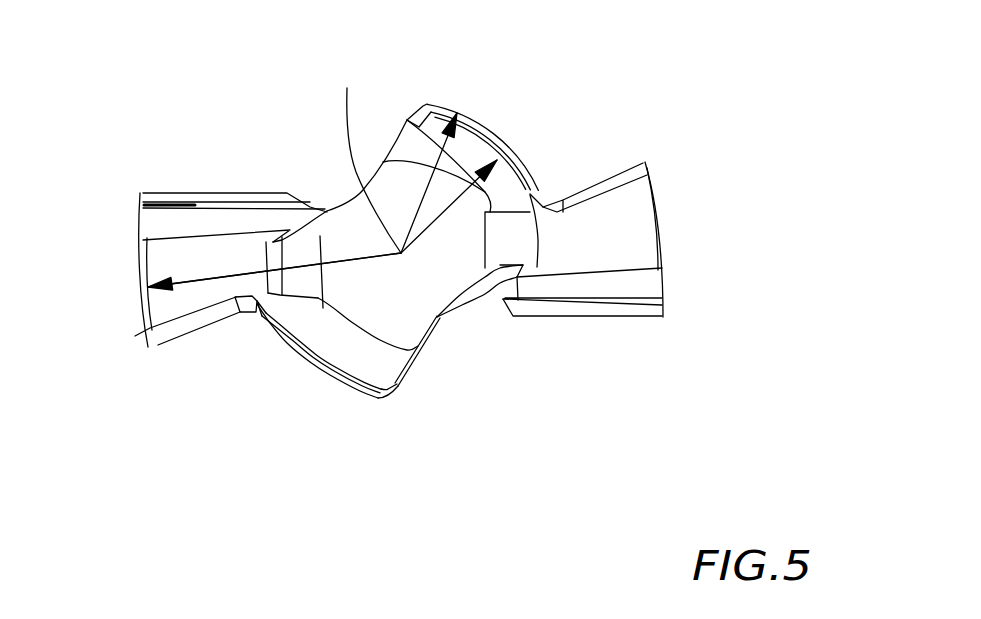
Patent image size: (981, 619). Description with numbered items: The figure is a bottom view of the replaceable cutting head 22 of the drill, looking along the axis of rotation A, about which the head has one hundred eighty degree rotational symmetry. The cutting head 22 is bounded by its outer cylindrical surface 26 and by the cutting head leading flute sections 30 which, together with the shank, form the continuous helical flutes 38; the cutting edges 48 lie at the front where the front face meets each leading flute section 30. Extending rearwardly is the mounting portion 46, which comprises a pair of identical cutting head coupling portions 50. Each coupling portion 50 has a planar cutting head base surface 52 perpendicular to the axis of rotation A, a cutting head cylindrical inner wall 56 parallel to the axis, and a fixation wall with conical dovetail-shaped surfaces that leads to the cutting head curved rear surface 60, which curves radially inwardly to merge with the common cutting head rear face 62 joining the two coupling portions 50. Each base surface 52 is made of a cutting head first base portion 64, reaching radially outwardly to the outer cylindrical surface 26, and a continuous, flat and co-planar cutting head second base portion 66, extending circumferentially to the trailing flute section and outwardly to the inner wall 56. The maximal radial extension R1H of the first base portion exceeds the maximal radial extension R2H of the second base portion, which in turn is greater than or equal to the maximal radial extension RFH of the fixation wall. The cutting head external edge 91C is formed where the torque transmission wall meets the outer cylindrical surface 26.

The cutting head 22 is at (600, 84).
The cutting head outer cylindrical surface 26 is at (143, 275).
The cutting head leading flute section 30 is at (193, 220).
The cutting edges 48 is at (223, 193).
The mounting portion 46 is at (322, 205).
The cutting head first base portion 64 is at (160, 253).
The axis of rotation A is at (371, 156).
The maximal radial extension of the cutting head first base portion R1H is at (147, 325).
The maximal radial extension of the cutting head second base portion R2H is at (405, 122).
The maximal radial extension of the cutting head fixation wall RFH is at (520, 190).
The cutting head second base portion 66 is at (478, 133).
The cutting head cylindrical inner wall 56 is at (290, 360).
The cutting head curved rear surface 60 is at (372, 362).
The cutting head rear face 62 is at (393, 328).
The cutting head and shank flute 38 is at (486, 296).
The cutting head external edge 91C is at (617, 225).
The cutting head coupling portion 50 is at (190, 316).
The cutting head base surface 52 is at (633, 222).